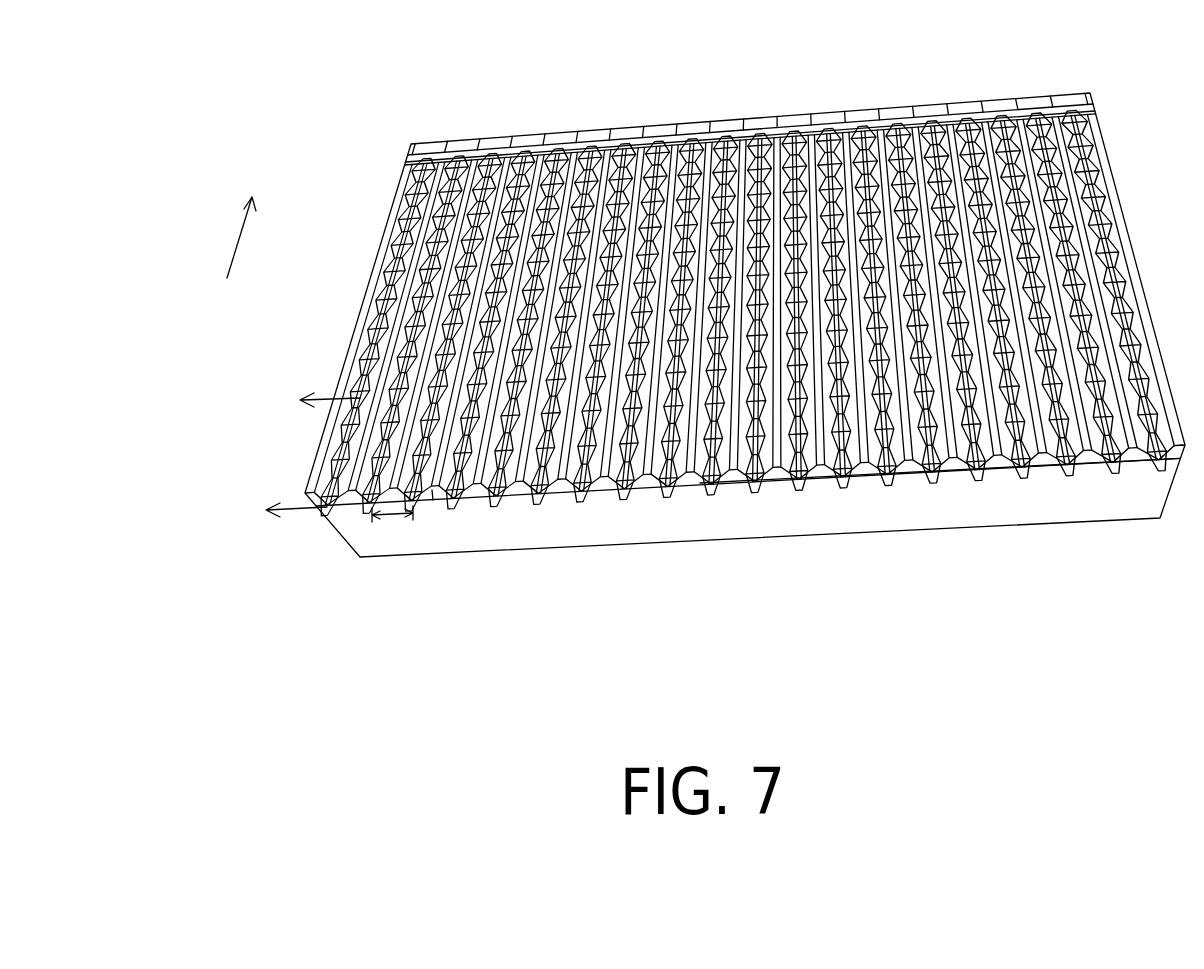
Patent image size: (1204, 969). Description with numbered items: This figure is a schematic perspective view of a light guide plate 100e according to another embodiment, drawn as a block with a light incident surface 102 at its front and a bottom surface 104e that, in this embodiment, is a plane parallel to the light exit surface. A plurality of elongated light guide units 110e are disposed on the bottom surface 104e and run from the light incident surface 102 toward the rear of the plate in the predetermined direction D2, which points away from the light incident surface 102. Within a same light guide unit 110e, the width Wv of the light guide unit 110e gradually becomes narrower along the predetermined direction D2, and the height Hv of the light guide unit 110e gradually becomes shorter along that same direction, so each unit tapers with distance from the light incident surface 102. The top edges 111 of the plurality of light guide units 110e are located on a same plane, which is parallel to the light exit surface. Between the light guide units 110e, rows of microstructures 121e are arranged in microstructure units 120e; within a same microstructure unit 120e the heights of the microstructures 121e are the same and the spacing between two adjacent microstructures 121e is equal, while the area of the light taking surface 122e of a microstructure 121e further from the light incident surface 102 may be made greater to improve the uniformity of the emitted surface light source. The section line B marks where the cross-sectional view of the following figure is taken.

The light guide plate 100e is at (212, 128).
The light incident surface 102 is at (567, 523).
The bottom surface 104e is at (862, 487).
The light guide unit 110e is at (708, 292).
The top edge 111 is at (413, 342).
The microstructure unit 120e is at (566, 121).
The microstructure 121e is at (515, 283).
The light taking surface 122e is at (535, 262).
The height of the light guide unit Hv is at (432, 490).
The width of the light guide unit Wv is at (397, 513).
The predetermined direction D2 is at (224, 237).
The section line B- B is at (302, 456).